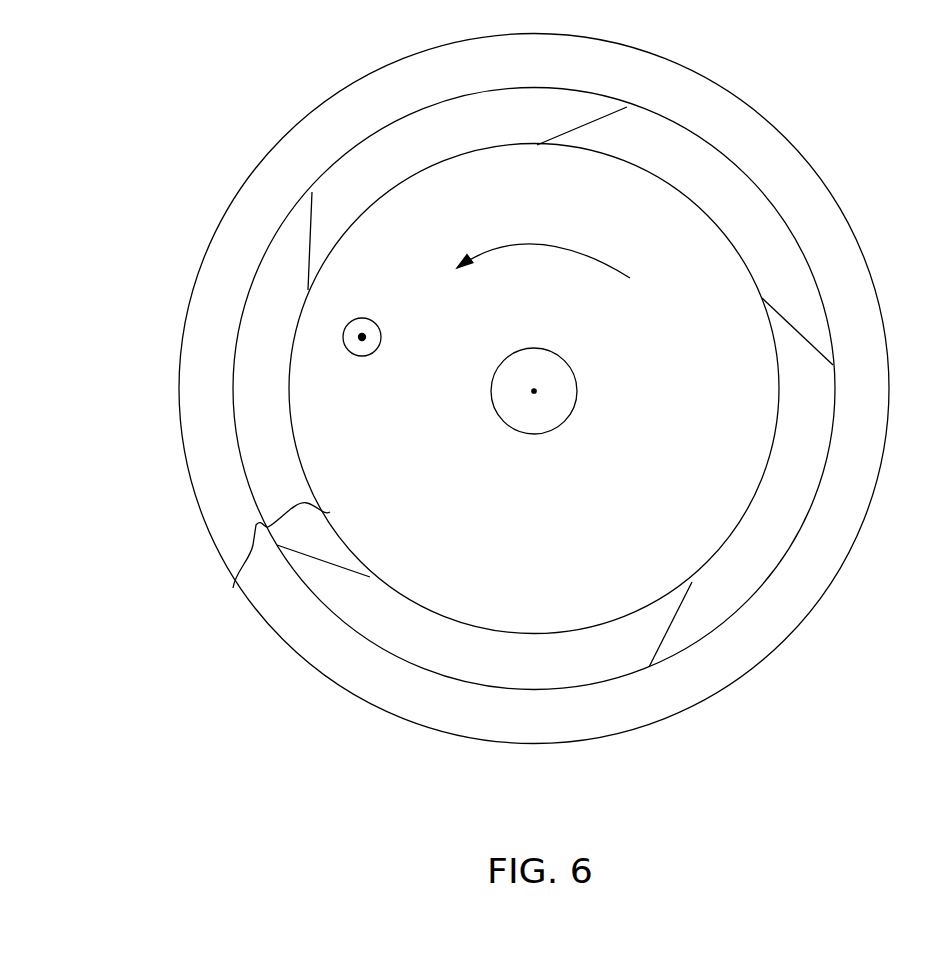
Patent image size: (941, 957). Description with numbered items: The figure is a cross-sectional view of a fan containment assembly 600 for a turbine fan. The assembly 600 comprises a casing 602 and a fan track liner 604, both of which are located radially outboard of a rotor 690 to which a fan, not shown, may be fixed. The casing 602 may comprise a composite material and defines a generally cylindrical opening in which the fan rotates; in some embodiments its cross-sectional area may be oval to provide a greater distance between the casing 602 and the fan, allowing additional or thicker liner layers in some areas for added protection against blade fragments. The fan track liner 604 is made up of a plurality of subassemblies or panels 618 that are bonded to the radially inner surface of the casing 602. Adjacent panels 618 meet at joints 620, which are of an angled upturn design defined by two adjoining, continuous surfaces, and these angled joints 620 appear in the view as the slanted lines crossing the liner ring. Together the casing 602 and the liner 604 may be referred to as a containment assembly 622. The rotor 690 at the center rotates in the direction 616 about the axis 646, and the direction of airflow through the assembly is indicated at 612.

The fan containment assembly 600 is at (174, 86).
The casing 602 is at (750, 131).
The fan track liner 604 is at (455, 176).
The direction of airflow 612 is at (355, 348).
The direction of rotation 616 is at (562, 272).
The panels 618 is at (549, 677).
The joints 620 is at (690, 628).
The containment assembly 622 is at (253, 523).
The axis 646 is at (552, 382).
The rotor 690 is at (590, 419).